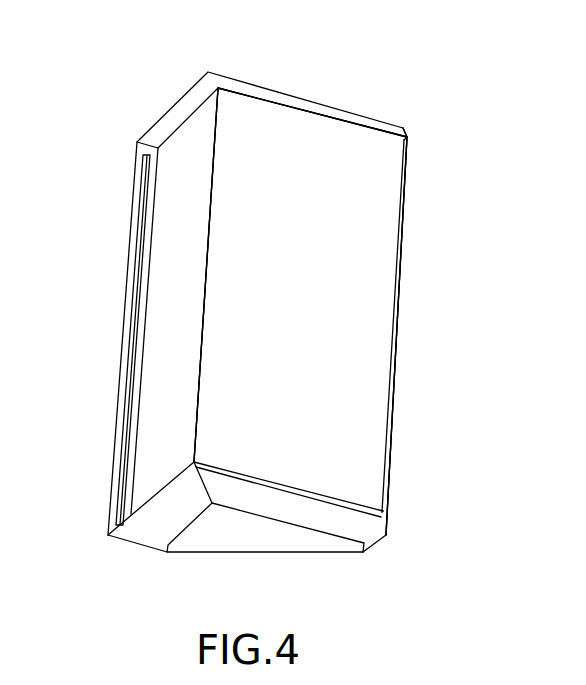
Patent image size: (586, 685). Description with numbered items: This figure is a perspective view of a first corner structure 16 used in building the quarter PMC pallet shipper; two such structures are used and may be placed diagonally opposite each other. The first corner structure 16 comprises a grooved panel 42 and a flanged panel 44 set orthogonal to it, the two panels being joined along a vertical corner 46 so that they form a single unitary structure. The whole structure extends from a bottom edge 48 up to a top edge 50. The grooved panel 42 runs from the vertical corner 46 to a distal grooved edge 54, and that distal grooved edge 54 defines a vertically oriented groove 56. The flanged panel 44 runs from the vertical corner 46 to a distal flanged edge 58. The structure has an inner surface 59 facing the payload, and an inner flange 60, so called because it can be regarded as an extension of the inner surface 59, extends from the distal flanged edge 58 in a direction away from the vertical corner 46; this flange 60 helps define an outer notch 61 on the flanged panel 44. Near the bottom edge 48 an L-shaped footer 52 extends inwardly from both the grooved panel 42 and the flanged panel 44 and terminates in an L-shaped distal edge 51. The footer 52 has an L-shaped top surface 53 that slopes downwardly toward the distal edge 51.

The first corner structure 16 is at (477, 144).
The grooved panel 42 is at (167, 320).
The flanged panel 44 is at (291, 306).
The vertical corner 46 is at (216, 186).
The bottom edge 48 is at (136, 547).
The top edge 50 is at (182, 117).
The L-shaped distal edge 51 is at (187, 528).
The L-shaped footer 52 is at (257, 503).
The L-shaped top surface 53 is at (346, 526).
The distal grooved edge 54 is at (135, 207).
The vertically oriented groove 56 is at (135, 342).
The distal flanged edge 58 is at (414, 126).
The inner surface 59 is at (347, 415).
The inner flange 60 is at (406, 233).
The outer notch 61 is at (420, 126).